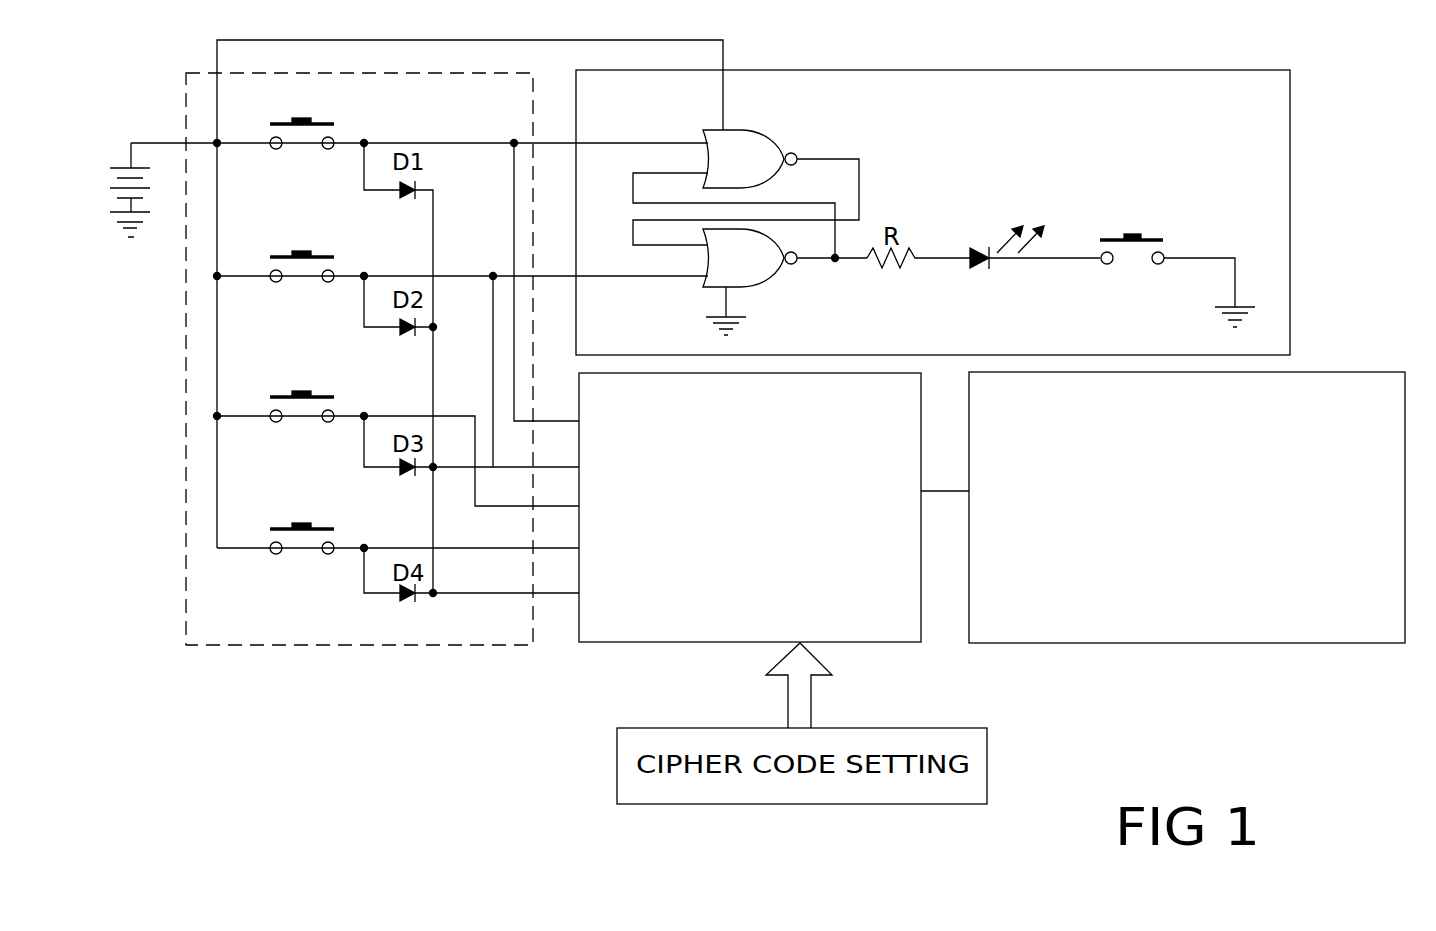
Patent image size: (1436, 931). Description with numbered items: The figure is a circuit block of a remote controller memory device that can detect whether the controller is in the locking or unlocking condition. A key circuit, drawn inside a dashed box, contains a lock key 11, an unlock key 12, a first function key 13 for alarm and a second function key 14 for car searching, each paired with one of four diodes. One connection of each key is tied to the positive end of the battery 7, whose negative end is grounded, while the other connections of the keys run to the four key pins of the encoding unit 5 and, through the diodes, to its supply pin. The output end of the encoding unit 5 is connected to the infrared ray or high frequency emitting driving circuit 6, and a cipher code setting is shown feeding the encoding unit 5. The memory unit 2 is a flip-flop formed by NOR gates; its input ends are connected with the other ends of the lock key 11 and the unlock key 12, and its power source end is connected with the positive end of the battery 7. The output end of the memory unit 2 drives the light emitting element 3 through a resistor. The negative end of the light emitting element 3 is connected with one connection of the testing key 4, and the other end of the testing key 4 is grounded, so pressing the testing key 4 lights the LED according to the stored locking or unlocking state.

The memory unit 2 is at (752, 163).
The light emitting element (LED) 3 is at (976, 262).
The testing key 4 is at (1142, 232).
The encoding unit 5 is at (838, 612).
The infrared ray (IR) or high frequency (RF) emitting driving circuit 6 is at (1281, 604).
The battery 7 is at (150, 187).
The lock key 11 is at (297, 118).
The unlock key 12 is at (301, 251).
The first function key (alarm) 13 is at (302, 391).
The second function key (car-searching) 14 is at (302, 523).